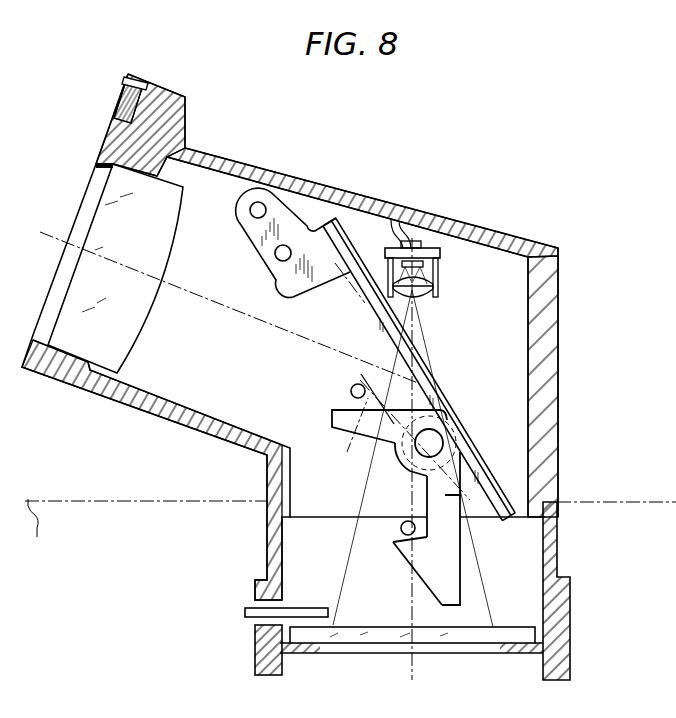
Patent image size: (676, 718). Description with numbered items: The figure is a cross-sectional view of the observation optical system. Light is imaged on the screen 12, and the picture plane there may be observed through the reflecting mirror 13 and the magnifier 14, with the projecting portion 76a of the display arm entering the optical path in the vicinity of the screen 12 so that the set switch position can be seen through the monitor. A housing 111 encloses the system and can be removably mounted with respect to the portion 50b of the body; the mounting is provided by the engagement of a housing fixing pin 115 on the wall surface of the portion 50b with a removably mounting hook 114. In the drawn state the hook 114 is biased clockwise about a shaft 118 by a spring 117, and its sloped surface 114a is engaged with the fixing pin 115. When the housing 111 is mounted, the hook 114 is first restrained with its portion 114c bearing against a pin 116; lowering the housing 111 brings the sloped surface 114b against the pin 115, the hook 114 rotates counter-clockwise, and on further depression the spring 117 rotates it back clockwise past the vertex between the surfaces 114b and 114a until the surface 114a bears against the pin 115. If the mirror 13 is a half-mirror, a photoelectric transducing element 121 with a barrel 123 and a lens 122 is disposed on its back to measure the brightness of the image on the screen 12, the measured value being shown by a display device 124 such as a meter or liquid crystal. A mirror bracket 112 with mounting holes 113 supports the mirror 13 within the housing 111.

The housing 111 is at (484, 237).
The display device 124 is at (142, 80).
The magnifier 14 is at (93, 205).
The mirror bracket 112 is at (291, 207).
The mounting holes 113 is at (276, 255).
The reflecting mirror 13 is at (365, 300).
The photoelectric transducing element 121 is at (428, 253).
The lens 122 is at (428, 300).
The barrel 123 is at (438, 277).
The pin 116 is at (351, 390).
The portion of the hook 114c is at (332, 417).
The spring 117 is at (346, 438).
The shaft 118 is at (414, 464).
The removably mounting hook 114 is at (461, 564).
The sloped surface 114a is at (425, 538).
The sloped surface 114b is at (422, 581).
The housing fixing pin 115 is at (402, 534).
The portion of the body 50b is at (571, 590).
The screen 12 is at (539, 637).
The projecting portion of the display arm 76a is at (256, 613).